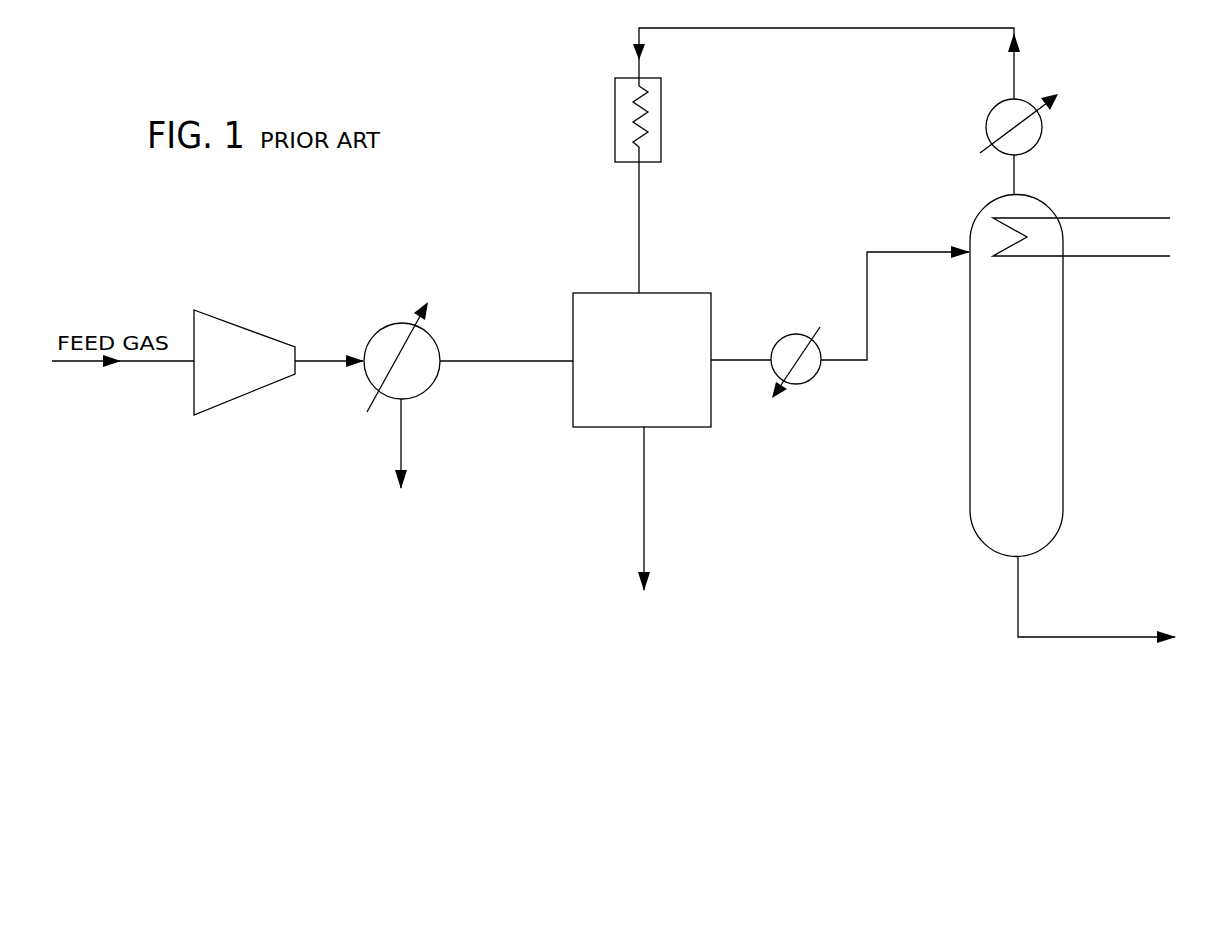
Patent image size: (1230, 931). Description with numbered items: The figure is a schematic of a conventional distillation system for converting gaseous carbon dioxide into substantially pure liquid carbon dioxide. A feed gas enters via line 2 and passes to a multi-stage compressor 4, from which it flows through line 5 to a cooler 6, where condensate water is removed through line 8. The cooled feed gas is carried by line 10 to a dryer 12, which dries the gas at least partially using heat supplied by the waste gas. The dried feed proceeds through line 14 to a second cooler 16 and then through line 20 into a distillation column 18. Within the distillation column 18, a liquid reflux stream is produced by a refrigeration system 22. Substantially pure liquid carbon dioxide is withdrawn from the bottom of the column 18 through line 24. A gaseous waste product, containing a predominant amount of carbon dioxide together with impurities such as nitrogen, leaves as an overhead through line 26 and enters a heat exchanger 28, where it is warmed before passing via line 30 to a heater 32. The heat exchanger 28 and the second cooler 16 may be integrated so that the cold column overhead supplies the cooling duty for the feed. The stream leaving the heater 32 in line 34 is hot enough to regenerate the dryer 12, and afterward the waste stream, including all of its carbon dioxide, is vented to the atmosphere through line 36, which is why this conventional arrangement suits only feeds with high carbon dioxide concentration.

The line 2 is at (151, 363).
The multi-stage compressor 4 is at (247, 333).
The line 5 is at (318, 361).
The cooler 6 is at (431, 378).
The line 8 is at (401, 433).
The line 10 is at (500, 361).
The dryer 12 is at (642, 360).
The line 14 is at (741, 360).
The second cooler 16 is at (795, 337).
The distillation column 18 is at (1016, 375).
The line 20 is at (867, 293).
The refrigeration system 22 is at (1098, 257).
The line 24 is at (1020, 583).
The line 26 is at (1014, 173).
The heat exchanger 28 is at (1042, 130).
The line 30 is at (838, 28).
The heater 32 is at (615, 110).
The line 34 is at (642, 237).
The line 36 is at (646, 503).